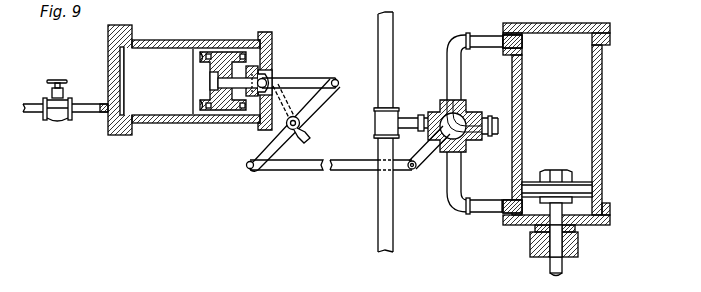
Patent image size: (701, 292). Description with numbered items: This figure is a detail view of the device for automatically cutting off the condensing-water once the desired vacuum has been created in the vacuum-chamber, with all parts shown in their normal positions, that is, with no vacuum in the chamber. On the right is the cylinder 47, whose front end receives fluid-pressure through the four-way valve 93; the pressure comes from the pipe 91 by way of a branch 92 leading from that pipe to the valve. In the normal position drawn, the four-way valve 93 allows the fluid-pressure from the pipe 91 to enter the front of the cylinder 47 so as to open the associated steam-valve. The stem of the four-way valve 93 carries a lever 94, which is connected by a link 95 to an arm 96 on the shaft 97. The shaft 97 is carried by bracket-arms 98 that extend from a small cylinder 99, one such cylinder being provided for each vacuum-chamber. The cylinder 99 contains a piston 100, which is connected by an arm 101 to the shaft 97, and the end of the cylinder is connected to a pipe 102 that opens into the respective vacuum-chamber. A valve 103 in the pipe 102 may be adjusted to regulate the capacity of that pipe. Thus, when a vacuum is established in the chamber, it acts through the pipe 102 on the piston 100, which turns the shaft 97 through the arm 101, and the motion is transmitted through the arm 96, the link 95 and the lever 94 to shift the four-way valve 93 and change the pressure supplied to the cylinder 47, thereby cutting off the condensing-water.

The cylinder 47 is at (564, 149).
The pipe 91 is at (386, 142).
The branch 92 is at (418, 116).
The four-way valve 93 is at (470, 116).
The lever 94 is at (431, 150).
The link 95 is at (371, 173).
The arm 96 is at (283, 164).
The shaft 97 is at (301, 126).
The bracket-arms 98 is at (294, 125).
The small cylinder 99 is at (190, 75).
The piston 100 is at (206, 70).
The arm 101 is at (326, 92).
The pipe 102 is at (72, 104).
The valve 103 is at (58, 120).